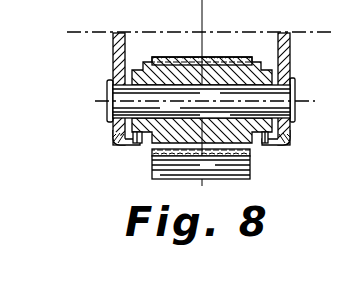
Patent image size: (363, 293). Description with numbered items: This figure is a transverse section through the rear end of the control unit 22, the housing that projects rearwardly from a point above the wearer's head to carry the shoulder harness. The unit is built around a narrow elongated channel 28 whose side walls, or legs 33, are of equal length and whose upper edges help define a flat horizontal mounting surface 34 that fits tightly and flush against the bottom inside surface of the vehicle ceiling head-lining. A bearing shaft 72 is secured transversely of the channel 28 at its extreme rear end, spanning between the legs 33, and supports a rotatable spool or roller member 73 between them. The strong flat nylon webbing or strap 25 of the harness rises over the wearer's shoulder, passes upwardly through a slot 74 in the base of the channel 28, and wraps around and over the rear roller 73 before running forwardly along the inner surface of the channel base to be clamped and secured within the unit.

The control unit 22 is at (284, 143).
The strap 25 is at (172, 58).
The channel 28 is at (128, 146).
The legs 33 is at (116, 61).
The mounting surface 34 is at (222, 32).
The bearing shaft 72 is at (276, 97).
The roller member 73 is at (250, 163).
The slot 74 is at (136, 145).